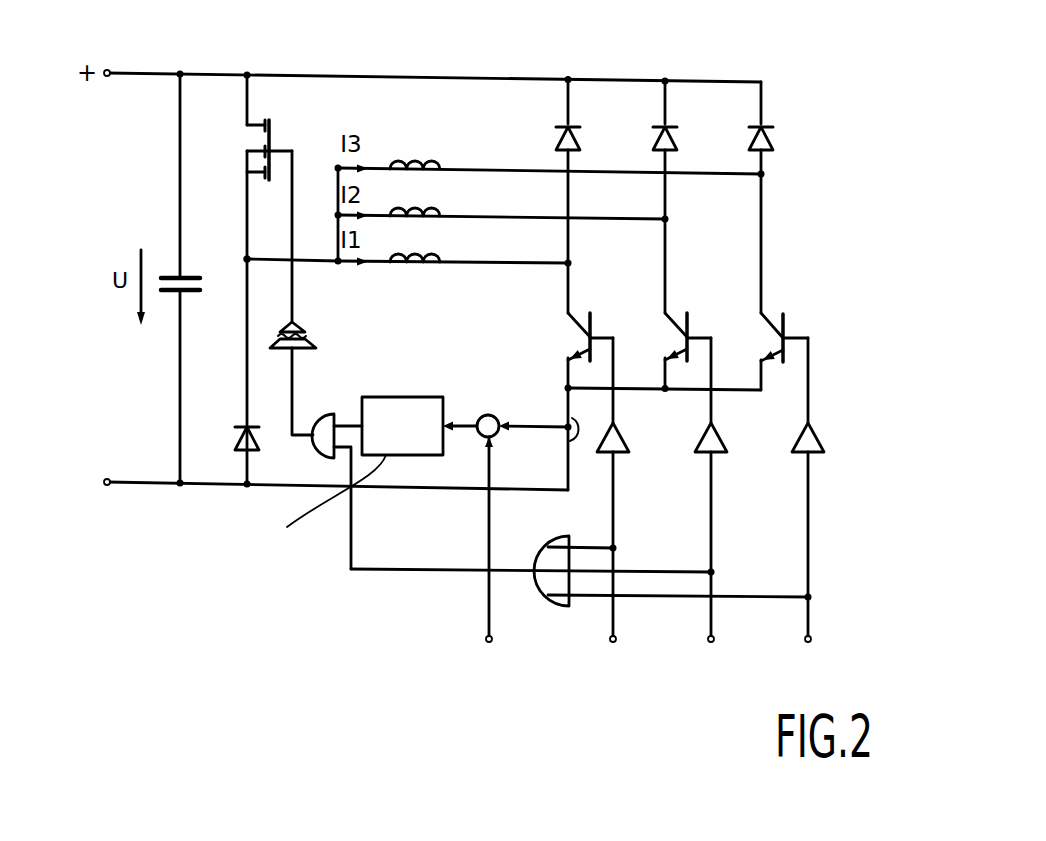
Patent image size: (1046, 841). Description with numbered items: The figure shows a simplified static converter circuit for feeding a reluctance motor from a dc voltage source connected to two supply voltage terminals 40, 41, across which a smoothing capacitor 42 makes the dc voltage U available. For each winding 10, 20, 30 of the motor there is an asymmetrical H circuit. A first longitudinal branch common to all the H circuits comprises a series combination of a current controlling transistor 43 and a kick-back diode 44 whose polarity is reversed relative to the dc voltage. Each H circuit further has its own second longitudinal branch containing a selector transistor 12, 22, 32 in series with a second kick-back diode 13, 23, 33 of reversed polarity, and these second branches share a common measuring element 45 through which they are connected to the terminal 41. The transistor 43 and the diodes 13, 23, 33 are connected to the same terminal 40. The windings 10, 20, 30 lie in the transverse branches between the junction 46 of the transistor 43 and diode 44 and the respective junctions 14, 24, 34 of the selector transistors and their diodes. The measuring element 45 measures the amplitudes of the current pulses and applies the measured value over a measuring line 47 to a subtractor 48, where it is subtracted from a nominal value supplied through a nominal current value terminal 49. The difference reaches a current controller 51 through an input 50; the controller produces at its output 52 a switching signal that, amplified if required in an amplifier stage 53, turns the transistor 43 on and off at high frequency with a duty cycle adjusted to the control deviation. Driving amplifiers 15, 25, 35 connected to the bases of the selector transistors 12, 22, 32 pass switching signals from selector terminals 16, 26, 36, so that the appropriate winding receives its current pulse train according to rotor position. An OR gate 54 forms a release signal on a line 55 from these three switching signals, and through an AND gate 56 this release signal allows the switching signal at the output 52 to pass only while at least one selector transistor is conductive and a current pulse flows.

The winding 10 is at (430, 267).
The selector transistor 12 is at (592, 321).
The second kick-back diode 13 is at (578, 139).
The junction 14 is at (574, 262).
The driving amplifier 15 is at (623, 438).
The selector terminal 16 is at (615, 642).
The winding 20 is at (427, 214).
The selector transistor 22 is at (689, 321).
The second kick-back diode 23 is at (675, 138).
The junction 24 is at (672, 220).
The driving amplifier 25 is at (720, 440).
The selector terminal 26 is at (712, 642).
The winding 30 is at (414, 163).
The selector transistor 32 is at (786, 322).
The second kick-back diode 33 is at (767, 127).
The junction 34 is at (769, 174).
The driving amplifier 35 is at (817, 437).
The selector terminal 36 is at (809, 642).
The supply voltage terminal 40 is at (110, 70).
The supply voltage terminal 41 is at (107, 486).
The smoothing capacitor 42 is at (189, 293).
The current controlling transistor 43 is at (262, 129).
The kick-back diode 44 is at (237, 442).
The measuring element 45 is at (572, 418).
The junction 46 is at (244, 256).
The measuring line 47 is at (543, 433).
The subtractor 48 is at (495, 414).
The nominal current value terminal 49 is at (489, 642).
The input 50 is at (465, 422).
The current controller 51 is at (413, 395).
The output 52 is at (351, 426).
The amplifier stage 53 is at (298, 324).
The OR gate 54 is at (553, 603).
The line 55 is at (398, 572).
The AND gate 56 is at (313, 440).